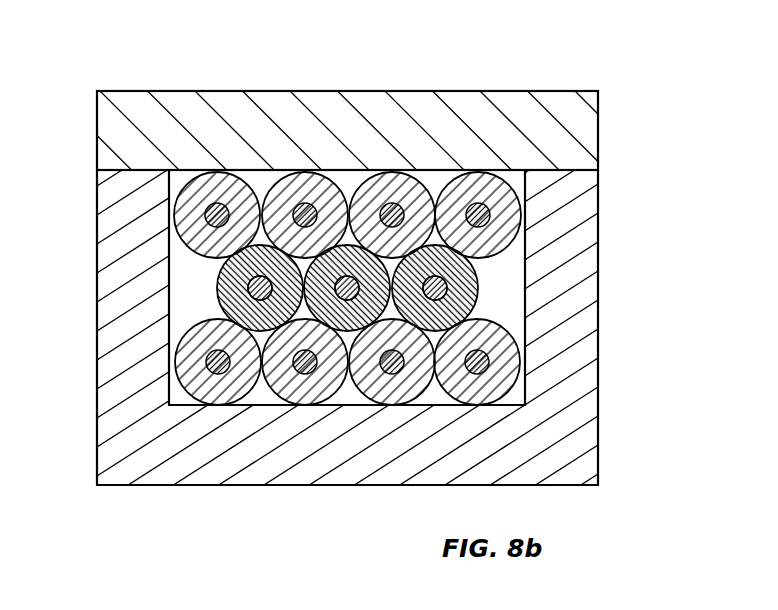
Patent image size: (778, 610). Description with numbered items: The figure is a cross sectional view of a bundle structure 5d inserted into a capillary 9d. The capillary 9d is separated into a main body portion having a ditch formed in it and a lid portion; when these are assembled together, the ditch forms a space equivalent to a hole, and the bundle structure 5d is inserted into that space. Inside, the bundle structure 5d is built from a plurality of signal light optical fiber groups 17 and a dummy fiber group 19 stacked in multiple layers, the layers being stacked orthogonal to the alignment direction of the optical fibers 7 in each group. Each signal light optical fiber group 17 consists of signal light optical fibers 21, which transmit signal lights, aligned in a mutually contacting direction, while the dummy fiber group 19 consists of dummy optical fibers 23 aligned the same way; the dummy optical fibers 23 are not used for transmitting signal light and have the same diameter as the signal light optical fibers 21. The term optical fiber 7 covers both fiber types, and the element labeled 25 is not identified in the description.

The bundle structure 5d is at (595, 78).
The capillary 9d is at (598, 438).
The signal light optical fiber group 17 is at (608, 248).
The dummy fiber group 19 is at (608, 315).
The signal light optical fiber 21 is at (230, 318).
The dummy optical fiber 23 is at (218, 363).
The conductor core 25 is at (212, 210).
The optical fiber 7 is at (258, 570).